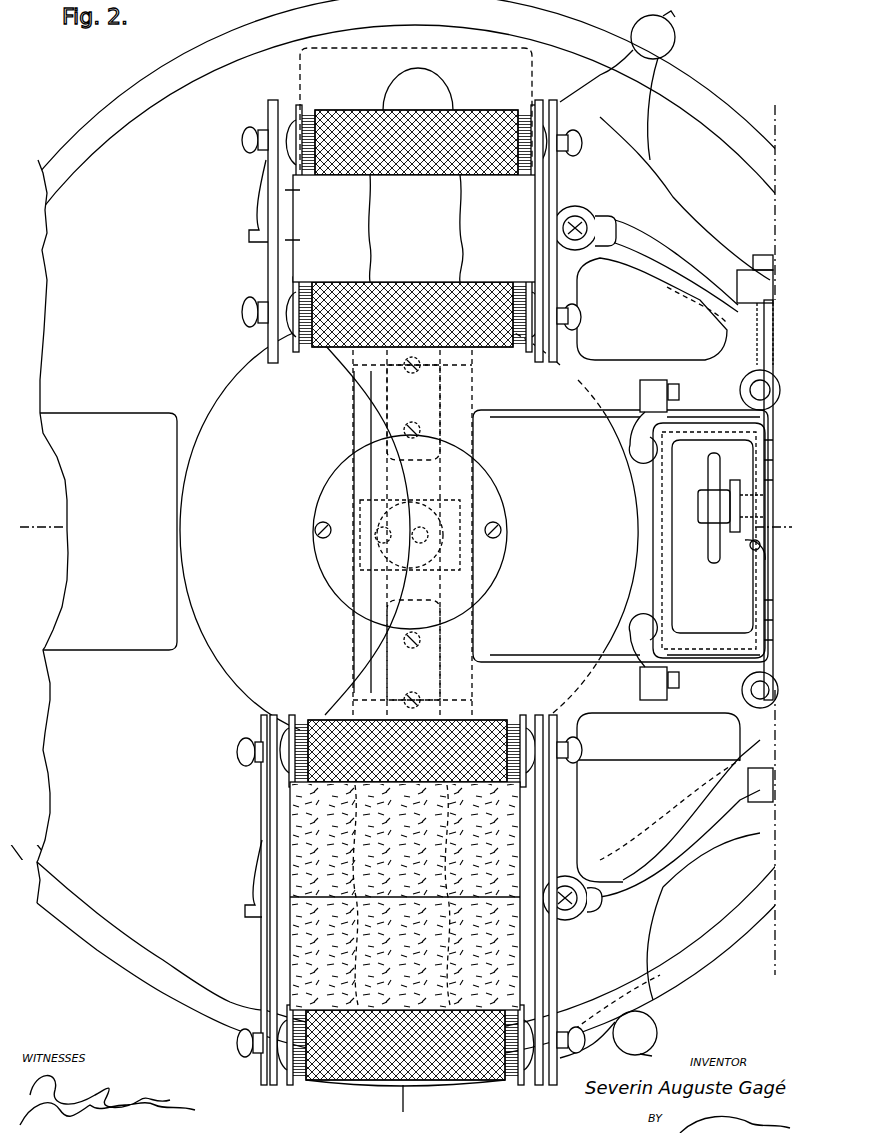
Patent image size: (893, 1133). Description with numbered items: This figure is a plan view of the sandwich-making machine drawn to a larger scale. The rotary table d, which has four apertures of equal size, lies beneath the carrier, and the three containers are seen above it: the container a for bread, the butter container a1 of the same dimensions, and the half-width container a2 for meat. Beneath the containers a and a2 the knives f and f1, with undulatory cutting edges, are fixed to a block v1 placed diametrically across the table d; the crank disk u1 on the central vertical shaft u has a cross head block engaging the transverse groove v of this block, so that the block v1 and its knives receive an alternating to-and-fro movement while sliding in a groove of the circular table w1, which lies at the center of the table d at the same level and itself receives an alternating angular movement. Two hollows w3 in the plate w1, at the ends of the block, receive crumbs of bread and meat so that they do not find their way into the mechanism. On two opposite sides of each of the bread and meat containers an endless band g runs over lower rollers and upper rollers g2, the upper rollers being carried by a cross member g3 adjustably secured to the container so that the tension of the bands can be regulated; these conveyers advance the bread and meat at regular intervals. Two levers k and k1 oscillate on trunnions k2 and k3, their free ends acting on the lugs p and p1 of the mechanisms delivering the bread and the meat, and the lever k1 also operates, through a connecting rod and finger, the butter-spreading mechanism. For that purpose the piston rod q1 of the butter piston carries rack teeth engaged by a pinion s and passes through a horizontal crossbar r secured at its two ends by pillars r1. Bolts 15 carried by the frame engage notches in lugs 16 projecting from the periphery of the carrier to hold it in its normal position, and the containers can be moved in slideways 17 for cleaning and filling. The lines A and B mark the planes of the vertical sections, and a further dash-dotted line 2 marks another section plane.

The section line 2- 2 is at (766, 537).
The bolts 15 is at (675, 22).
The lugs 16 is at (611, 554).
The slideways 17 is at (552, 412).
The section line A— A is at (406, 516).
The section line B— B is at (392, 1098).
The container a is at (278, 948).
The container a1 is at (695, 612).
The container a2 is at (298, 225).
The rotary table d is at (446, 530).
The knife f is at (460, 920).
The knife f1 is at (415, 165).
The endless band g is at (348, 110).
The upper rollers g2 is at (505, 178).
The cross member g3 is at (275, 262).
The lever k is at (690, 800).
The lever k1 is at (700, 262).
The trunnion k2 is at (752, 795).
The trunnion k3 is at (745, 288).
The lug p is at (590, 915).
The lug p1 is at (612, 222).
The piston rod q1 is at (750, 555).
The horizontal crossbar r is at (762, 500).
The pillars r1 is at (740, 393).
The pinion s is at (752, 492).
The vertical shaft u is at (420, 549).
The crank disk u1 is at (384, 549).
The transverse groove v is at (410, 532).
The block v1 is at (445, 604).
The circular table w1 is at (630, 538).
The hollows w3 is at (470, 355).